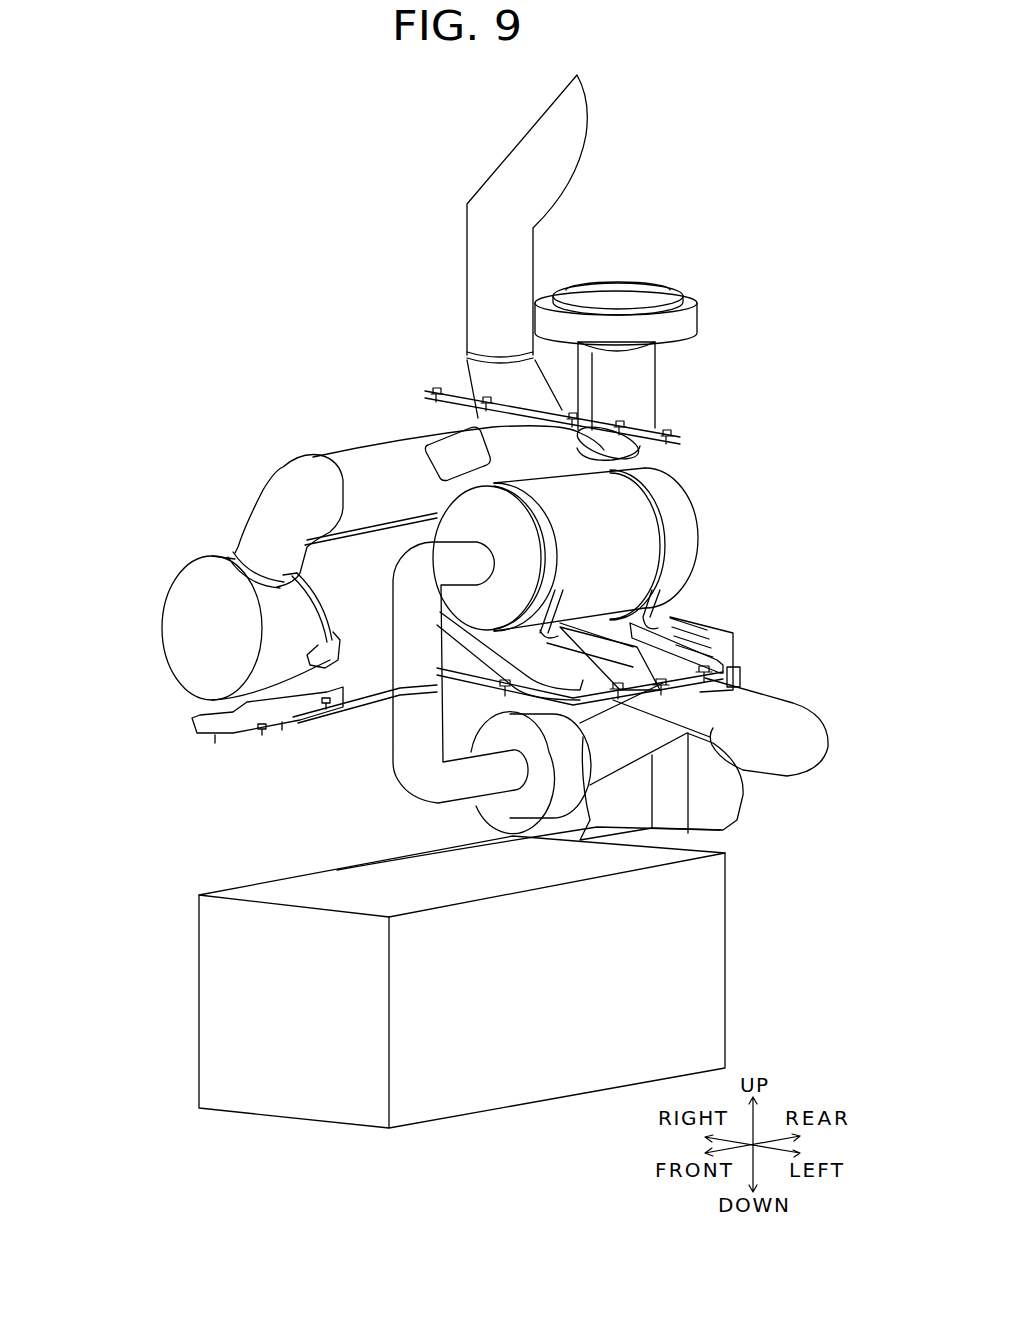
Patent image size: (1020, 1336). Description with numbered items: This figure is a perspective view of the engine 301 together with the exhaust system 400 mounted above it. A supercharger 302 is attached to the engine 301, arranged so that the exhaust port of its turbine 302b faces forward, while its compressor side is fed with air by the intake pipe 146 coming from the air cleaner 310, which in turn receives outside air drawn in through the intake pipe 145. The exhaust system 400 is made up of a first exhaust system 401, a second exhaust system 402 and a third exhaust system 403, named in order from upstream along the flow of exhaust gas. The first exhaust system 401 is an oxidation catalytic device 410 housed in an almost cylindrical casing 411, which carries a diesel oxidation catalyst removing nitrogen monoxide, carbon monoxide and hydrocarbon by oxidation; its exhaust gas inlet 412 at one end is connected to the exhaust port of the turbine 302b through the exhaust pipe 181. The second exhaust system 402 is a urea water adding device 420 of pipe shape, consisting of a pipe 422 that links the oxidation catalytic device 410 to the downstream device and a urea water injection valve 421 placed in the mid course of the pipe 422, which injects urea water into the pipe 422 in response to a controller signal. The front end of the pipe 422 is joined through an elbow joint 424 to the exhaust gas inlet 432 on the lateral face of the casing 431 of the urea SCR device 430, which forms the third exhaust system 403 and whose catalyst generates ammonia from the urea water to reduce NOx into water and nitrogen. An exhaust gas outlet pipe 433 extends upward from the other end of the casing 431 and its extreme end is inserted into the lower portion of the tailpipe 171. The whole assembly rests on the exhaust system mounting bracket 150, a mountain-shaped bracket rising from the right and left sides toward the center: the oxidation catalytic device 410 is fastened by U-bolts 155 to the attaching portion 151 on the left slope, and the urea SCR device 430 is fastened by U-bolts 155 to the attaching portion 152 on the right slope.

The tailpipe 171 is at (478, 248).
The intake pipe 145 is at (632, 373).
The exhaust gas outlet pipe 433 is at (470, 390).
The exhaust system 400 is at (452, 513).
The second exhaust system 402 is at (444, 435).
The urea water adding device 420 is at (444, 435).
The urea water injection valve 421 is at (453, 447).
The pipe 422 is at (380, 460).
The elbow joint 424 is at (262, 504).
The exhaust gas inlet 432 is at (233, 550).
The third exhaust system 403 is at (207, 601).
The urea SCR device 430 is at (207, 601).
The casing 431 is at (278, 623).
The first exhaust system 401 is at (631, 541).
The oxidation catalytic device 410 is at (631, 541).
The casing 411 is at (678, 572).
The exhaust gas inlet 412 is at (490, 555).
The U-bolts 155 is at (313, 603).
The air cleaner 310 is at (725, 657).
The intake pipe 146 is at (783, 718).
The attaching portion 151 is at (580, 703).
The exhaust system mounting bracket 150 is at (241, 745).
The attaching portion 152 is at (243, 703).
The exhaust pipe 181 is at (400, 662).
The supercharger 302 is at (675, 807).
The turbine 302b is at (537, 786).
The engine 301 is at (459, 1015).